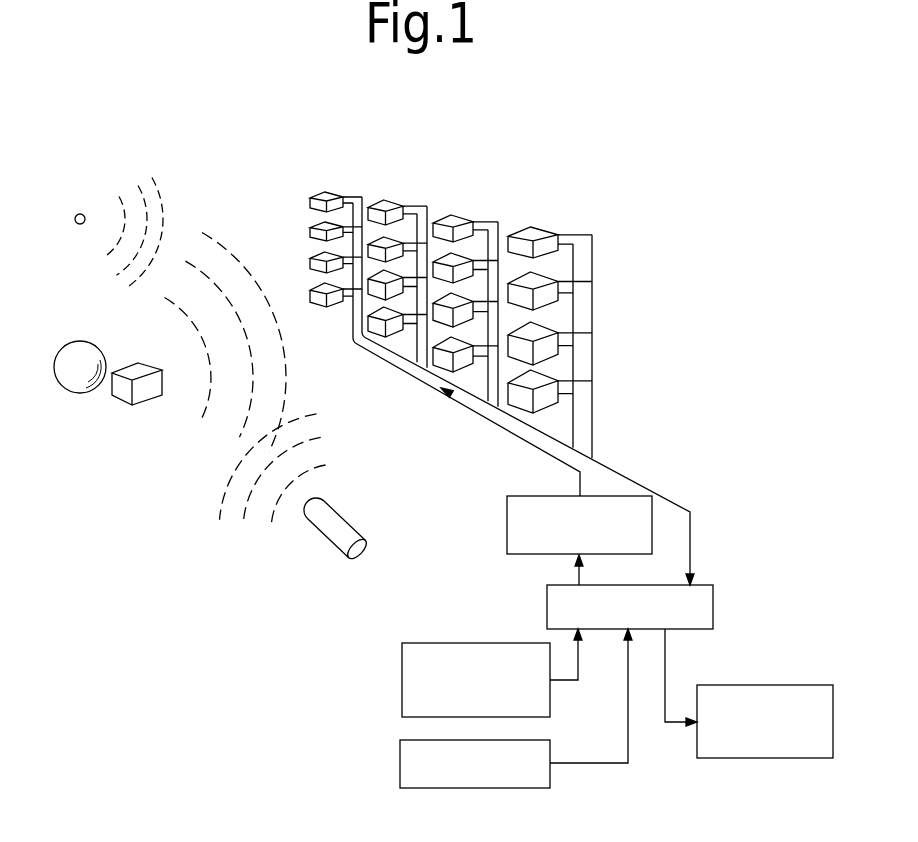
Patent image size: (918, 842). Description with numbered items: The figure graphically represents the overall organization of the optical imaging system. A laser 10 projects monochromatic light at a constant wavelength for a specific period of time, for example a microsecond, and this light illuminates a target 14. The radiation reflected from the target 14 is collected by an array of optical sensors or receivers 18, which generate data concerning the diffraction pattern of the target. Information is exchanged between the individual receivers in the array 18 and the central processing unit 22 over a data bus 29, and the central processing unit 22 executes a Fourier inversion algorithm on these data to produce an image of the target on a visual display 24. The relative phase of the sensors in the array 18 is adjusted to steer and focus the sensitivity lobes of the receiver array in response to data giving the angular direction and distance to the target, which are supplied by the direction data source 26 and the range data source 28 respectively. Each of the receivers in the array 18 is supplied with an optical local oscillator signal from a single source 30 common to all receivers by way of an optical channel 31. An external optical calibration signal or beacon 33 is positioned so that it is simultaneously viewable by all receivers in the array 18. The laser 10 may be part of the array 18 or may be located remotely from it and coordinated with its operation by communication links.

The laser 10 is at (350, 521).
The target 14 is at (99, 409).
The array of optical sensors or receivers 18 is at (494, 208).
The central processing unit 22 is at (703, 585).
The visual display 24 is at (735, 685).
The direction data source 26 is at (402, 679).
The range data source 28 is at (400, 763).
The data bus 29 is at (600, 462).
The optical local oscillator source 30 is at (507, 539).
The optical channel 31 is at (540, 449).
The optical calibration signal or beacon 33 is at (84, 214).